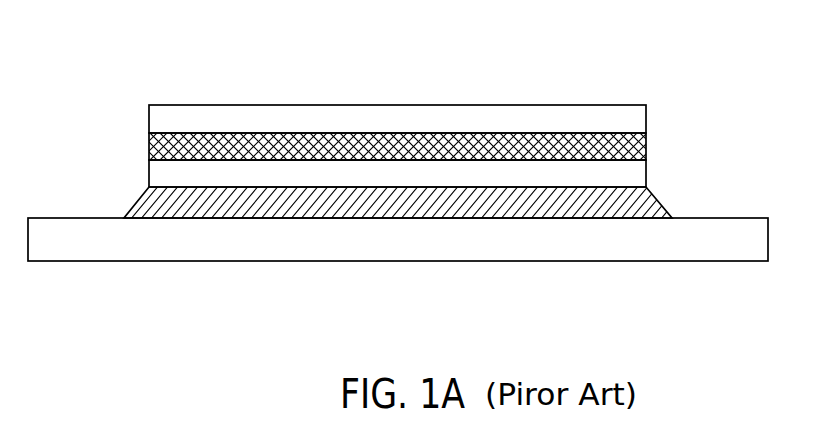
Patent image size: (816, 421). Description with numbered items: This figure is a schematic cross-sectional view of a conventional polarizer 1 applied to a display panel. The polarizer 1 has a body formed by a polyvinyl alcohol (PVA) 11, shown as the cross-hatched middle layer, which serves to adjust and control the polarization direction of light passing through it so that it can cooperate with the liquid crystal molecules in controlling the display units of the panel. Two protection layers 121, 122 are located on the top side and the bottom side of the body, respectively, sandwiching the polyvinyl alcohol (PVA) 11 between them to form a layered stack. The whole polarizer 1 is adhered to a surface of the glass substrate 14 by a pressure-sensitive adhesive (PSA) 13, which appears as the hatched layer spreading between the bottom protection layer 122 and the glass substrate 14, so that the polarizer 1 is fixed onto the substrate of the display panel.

The polarizer 1 is at (568, 66).
The polyvinyl alcohol (PVA) 11 is at (149, 146).
The protection layer 121 is at (647, 116).
The protection layer 122 is at (647, 173).
The pressure-sensitive adhesive (PSA) 13 is at (138, 196).
The glass substrate 14 is at (655, 261).